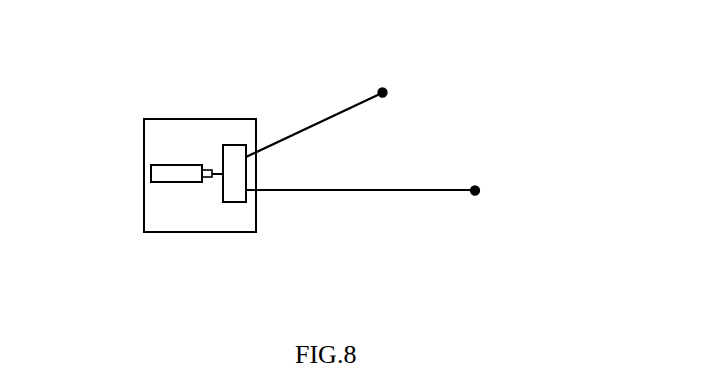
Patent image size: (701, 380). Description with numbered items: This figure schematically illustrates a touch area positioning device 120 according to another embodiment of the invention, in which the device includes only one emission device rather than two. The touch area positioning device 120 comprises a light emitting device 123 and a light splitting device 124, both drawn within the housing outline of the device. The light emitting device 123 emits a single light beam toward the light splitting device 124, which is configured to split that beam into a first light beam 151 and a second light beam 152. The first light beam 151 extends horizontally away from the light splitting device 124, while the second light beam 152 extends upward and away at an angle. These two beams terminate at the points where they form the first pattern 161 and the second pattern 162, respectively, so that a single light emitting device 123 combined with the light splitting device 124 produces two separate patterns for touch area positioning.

The touch area positioning device 120 is at (159, 221).
The light emitting device 123 is at (152, 126).
The light splitting device 124 is at (184, 108).
The first light beam 151 is at (360, 253).
The second light beam 152 is at (356, 187).
The first pattern 161 is at (525, 148).
The second pattern 162 is at (434, 60).